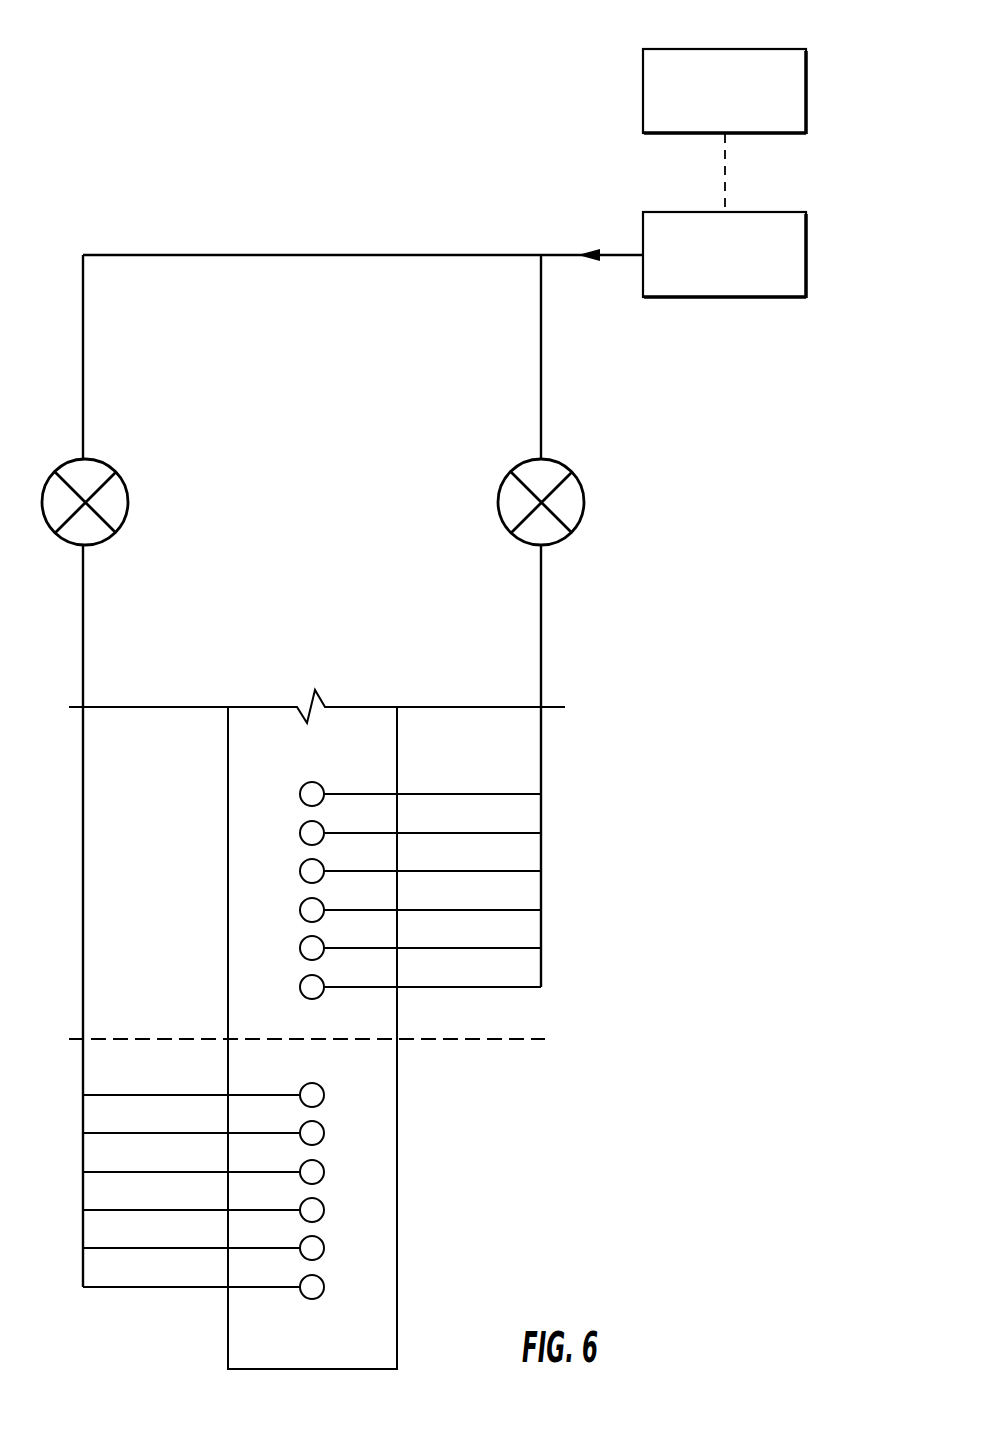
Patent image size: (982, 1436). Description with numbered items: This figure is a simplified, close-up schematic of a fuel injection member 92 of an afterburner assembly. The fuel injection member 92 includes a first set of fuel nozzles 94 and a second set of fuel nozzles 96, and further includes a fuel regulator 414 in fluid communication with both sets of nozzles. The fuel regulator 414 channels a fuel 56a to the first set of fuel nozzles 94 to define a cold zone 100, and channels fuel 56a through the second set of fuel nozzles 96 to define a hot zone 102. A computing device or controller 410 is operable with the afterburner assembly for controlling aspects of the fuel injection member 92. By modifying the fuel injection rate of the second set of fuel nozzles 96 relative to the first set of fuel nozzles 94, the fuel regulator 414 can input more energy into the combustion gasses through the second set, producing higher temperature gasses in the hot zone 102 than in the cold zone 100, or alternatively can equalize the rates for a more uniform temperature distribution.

The computing device or controller 410 is at (778, 49).
The fuel regulator 414 is at (778, 212).
The fuel 56a is at (586, 253).
The fuel injection member 92 is at (176, 926).
The first set of fuel nozzles 94 is at (300, 794).
The second set of fuel nozzles 96 is at (325, 1095).
The cold zone 100 is at (339, 886).
The hot zone 102 is at (289, 1182).